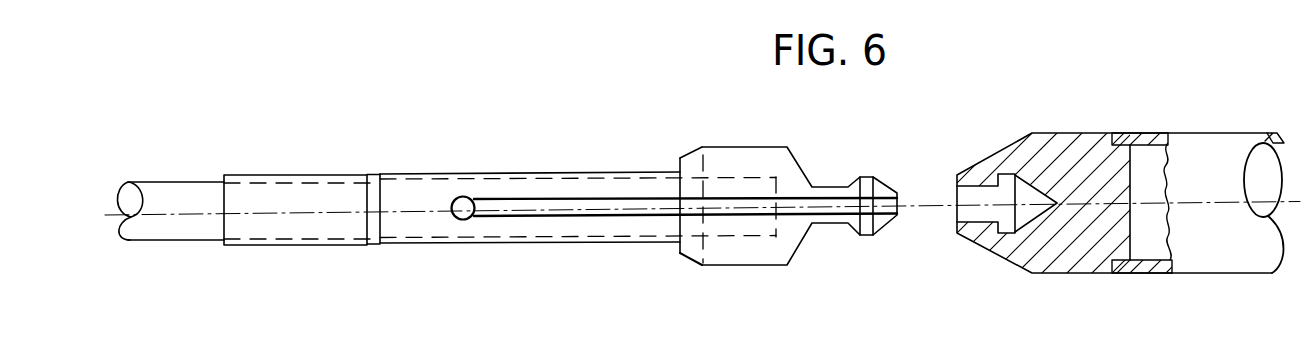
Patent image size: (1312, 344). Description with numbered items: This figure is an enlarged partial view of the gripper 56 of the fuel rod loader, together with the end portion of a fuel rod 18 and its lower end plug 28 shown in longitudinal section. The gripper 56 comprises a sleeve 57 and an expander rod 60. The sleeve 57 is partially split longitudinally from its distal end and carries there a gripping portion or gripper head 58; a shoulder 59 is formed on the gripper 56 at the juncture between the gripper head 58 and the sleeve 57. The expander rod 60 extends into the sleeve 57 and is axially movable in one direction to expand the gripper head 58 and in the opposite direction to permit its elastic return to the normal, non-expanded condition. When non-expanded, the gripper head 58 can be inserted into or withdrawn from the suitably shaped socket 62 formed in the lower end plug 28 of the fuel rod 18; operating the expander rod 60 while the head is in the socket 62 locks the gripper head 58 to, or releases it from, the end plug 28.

The fuel rod 18 is at (1208, 140).
The lower end plug 28 is at (1055, 140).
The gripper 56 is at (580, 243).
The sleeve 57 is at (423, 174).
The gripper head 58 is at (730, 155).
The shoulder 59 is at (682, 157).
The expander rod 60 is at (205, 240).
The socket 62 is at (958, 212).